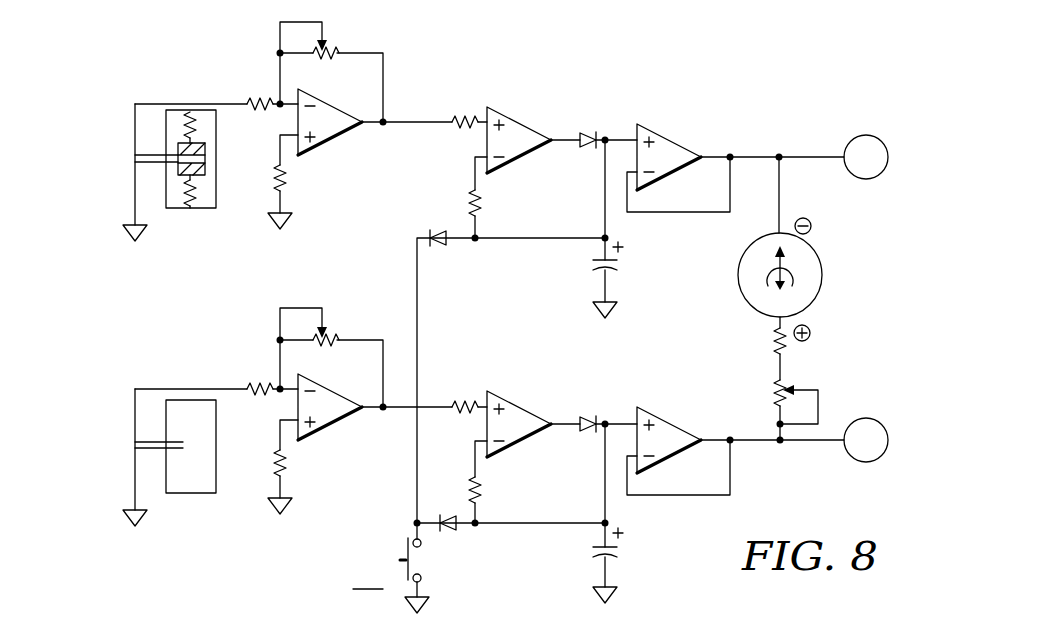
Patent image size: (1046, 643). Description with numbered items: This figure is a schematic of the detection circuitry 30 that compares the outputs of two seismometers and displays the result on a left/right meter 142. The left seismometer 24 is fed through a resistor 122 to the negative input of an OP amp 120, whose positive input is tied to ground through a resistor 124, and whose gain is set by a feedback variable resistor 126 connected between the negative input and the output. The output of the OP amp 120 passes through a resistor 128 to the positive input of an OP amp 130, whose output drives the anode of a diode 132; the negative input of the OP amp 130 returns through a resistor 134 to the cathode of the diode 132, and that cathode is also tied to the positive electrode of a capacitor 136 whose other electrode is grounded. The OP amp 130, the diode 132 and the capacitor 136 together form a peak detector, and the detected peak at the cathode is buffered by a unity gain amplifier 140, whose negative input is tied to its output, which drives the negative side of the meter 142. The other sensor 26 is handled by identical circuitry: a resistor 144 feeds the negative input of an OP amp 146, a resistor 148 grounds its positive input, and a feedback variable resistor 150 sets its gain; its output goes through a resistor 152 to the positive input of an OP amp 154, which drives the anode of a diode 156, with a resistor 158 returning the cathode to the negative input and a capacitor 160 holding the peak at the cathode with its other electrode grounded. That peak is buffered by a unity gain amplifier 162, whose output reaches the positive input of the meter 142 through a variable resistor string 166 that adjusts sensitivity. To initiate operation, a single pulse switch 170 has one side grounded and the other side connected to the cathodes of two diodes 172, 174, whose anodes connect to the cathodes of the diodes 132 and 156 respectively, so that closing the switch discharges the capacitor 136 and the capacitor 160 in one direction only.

The left seismometer 24 is at (190, 209).
The sensor 26 is at (190, 494).
The circuit 30 is at (784, 69).
The OP amp 120 is at (346, 114).
The resistor 122 is at (245, 100).
The resistor 124 is at (286, 180).
The variable resistor 126 is at (334, 50).
The resistor 128 is at (460, 118).
The OP amp 130 is at (531, 128).
The diode 132 is at (590, 131).
The resistor 134 is at (482, 203).
The capacitor 136 is at (618, 265).
The unity gain amplifier 140 is at (684, 147).
The left/right meter 142 is at (822, 278).
The resistor 144 is at (245, 386).
The OP amp 146 is at (346, 400).
The resistor 148 is at (286, 466).
The feedback variable resistor 150 is at (335, 337).
The resistor 152 is at (460, 403).
The OP amp 154 is at (531, 412).
The diode 156 is at (590, 417).
The resistor 158 is at (482, 490).
The capacitor 160 is at (618, 553).
The unity gain amplifier 162 is at (667, 423).
The variable resistor string 166 is at (776, 345).
The single pulse switch 170 is at (421, 565).
The diode 172 is at (435, 230).
The diode 174 is at (444, 514).